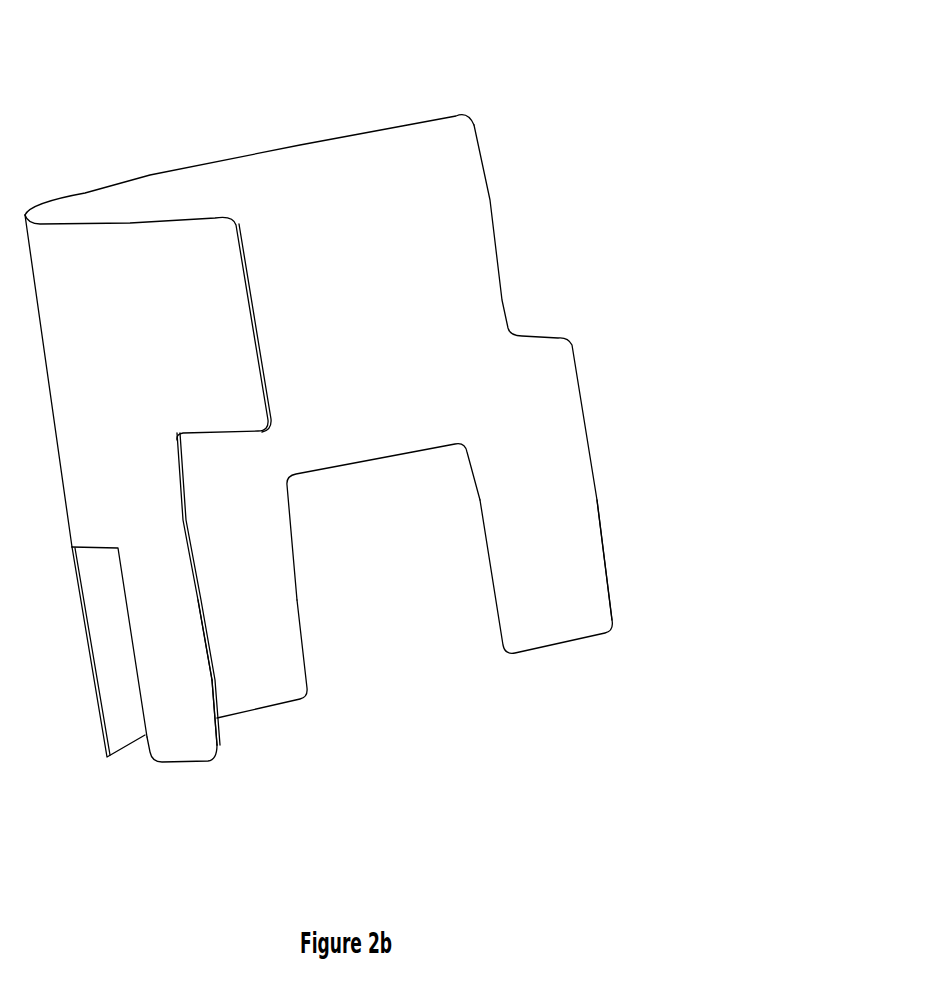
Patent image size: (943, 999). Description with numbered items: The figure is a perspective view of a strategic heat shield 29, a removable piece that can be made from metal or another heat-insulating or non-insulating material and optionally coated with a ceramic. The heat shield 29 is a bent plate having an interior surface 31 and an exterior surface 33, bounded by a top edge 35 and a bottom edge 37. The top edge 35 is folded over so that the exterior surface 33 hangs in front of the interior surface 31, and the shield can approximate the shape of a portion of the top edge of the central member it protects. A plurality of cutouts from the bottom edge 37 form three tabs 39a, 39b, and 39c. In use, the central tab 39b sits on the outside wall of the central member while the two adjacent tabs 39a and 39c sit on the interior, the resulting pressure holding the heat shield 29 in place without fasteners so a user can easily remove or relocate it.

The strategic heat shield 29 is at (517, 88).
The interior surface 31 is at (379, 443).
The exterior surface 33 is at (148, 381).
The top edge 35 is at (85, 193).
The bottom edge 37 is at (122, 747).
The tab 39a is at (546, 576).
The central tab 39b is at (252, 659).
The tab 39c is at (182, 721).